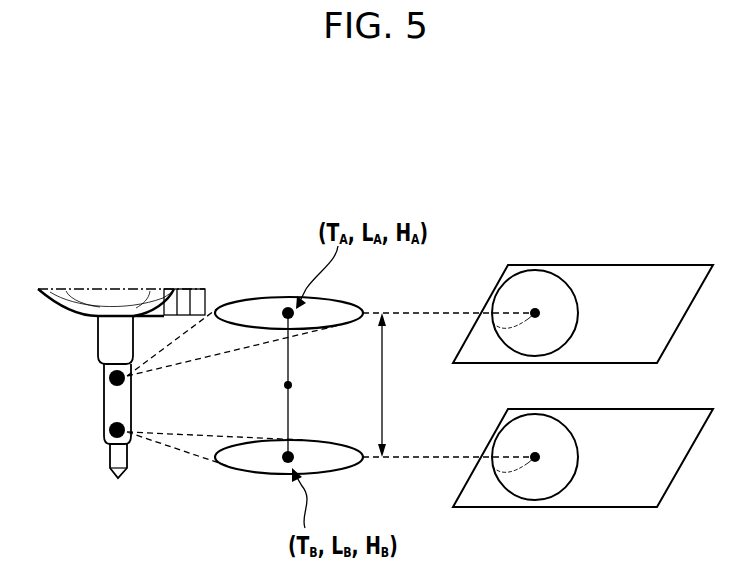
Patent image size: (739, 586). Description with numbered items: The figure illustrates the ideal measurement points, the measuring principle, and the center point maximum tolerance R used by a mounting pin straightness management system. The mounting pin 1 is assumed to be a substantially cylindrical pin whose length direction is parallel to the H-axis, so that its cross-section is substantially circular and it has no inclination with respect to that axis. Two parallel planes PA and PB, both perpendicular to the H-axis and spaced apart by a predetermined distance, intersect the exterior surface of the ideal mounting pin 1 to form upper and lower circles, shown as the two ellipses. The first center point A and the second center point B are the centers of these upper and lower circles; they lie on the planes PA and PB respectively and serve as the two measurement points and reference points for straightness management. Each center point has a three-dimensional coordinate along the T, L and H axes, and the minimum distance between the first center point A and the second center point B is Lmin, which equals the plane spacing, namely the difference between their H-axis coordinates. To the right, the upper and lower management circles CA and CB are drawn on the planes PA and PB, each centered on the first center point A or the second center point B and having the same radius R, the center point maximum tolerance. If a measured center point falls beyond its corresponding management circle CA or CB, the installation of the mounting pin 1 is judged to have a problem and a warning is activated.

The mounting pin 1 is at (121, 404).
The first center point A is at (104, 381).
The second center point B is at (104, 433).
The center point maximum tolerance R is at (513, 402).
The minimum distance between first and second center points Lmin is at (401, 385).
The upper plane PA is at (583, 314).
The lower plane PB is at (583, 458).
The upper management circle CA is at (556, 313).
The lower management circle CB is at (556, 457).